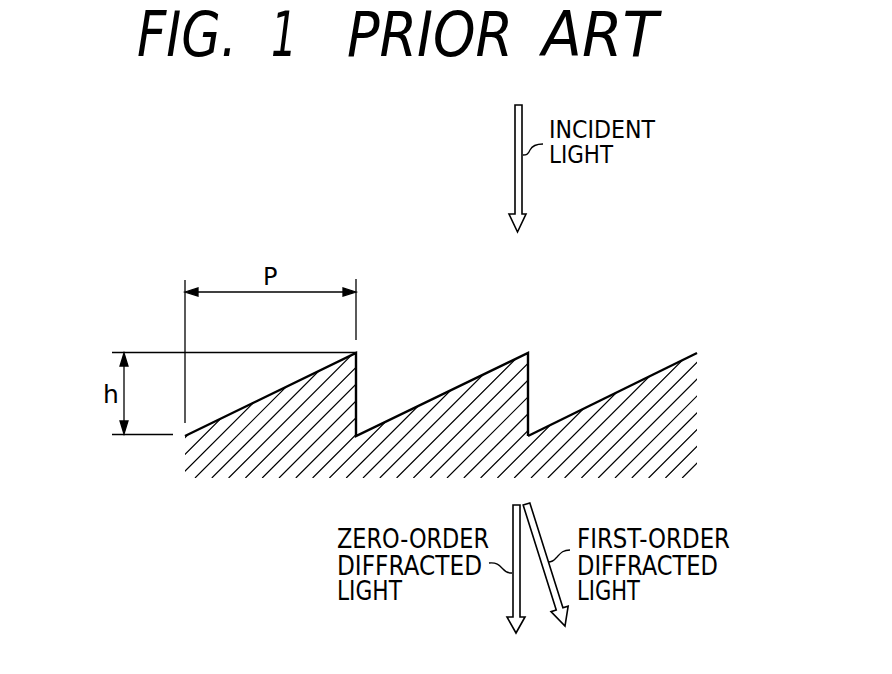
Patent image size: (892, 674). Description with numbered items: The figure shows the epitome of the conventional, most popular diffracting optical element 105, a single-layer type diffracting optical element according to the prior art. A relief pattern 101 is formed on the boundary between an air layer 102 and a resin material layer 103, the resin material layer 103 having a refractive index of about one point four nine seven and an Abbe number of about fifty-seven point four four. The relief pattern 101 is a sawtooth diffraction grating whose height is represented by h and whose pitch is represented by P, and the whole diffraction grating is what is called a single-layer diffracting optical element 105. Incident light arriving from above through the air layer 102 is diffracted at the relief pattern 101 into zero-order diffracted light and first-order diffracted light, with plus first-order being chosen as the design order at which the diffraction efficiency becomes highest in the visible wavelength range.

The relief pattern 101 is at (660, 371).
The air layer 102 is at (659, 347).
The resin material layer 103 is at (660, 428).
The diffracting optical element 105 is at (68, 488).